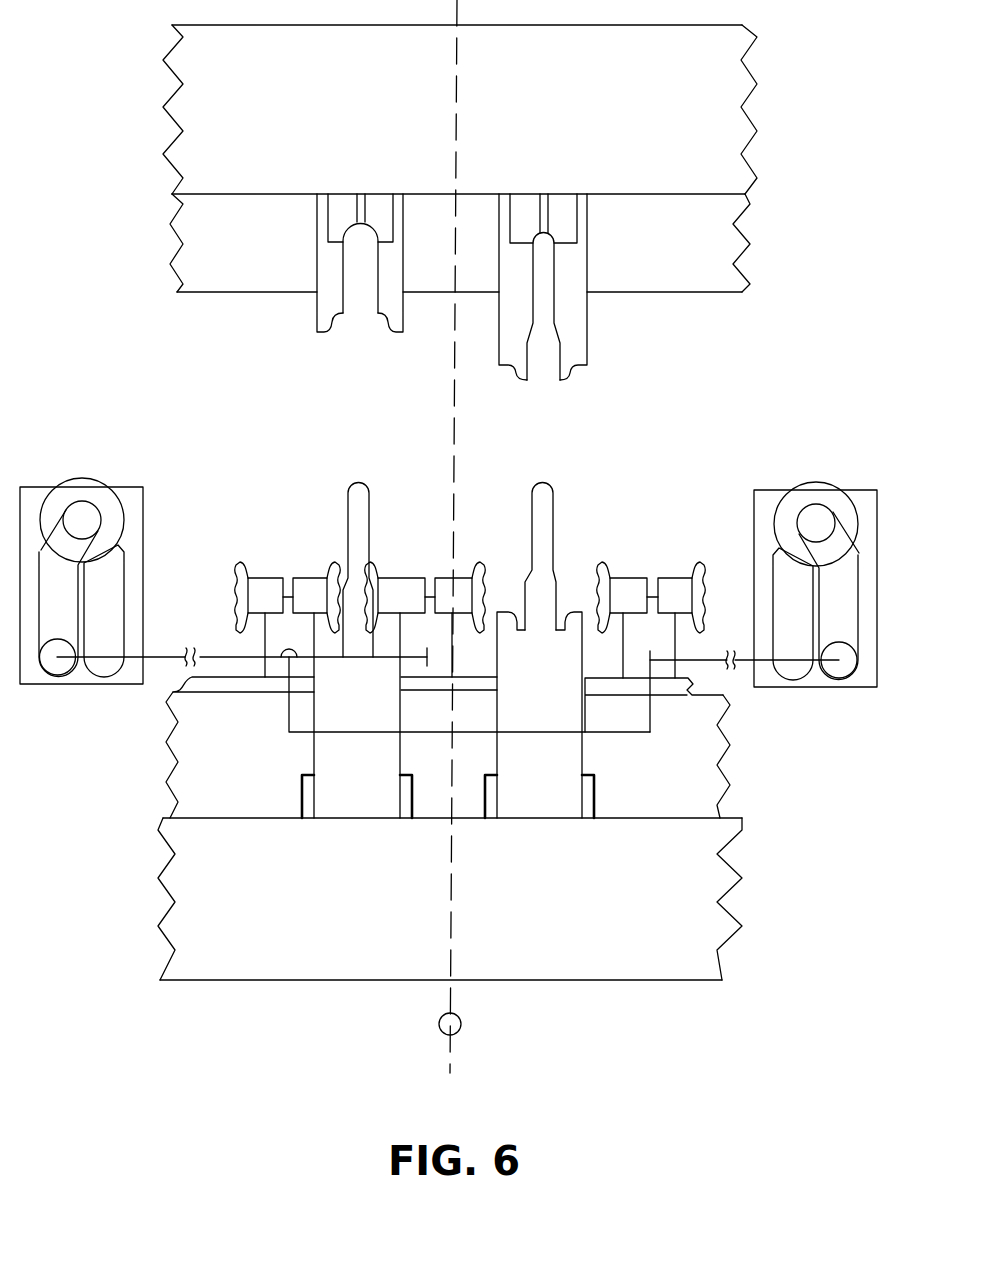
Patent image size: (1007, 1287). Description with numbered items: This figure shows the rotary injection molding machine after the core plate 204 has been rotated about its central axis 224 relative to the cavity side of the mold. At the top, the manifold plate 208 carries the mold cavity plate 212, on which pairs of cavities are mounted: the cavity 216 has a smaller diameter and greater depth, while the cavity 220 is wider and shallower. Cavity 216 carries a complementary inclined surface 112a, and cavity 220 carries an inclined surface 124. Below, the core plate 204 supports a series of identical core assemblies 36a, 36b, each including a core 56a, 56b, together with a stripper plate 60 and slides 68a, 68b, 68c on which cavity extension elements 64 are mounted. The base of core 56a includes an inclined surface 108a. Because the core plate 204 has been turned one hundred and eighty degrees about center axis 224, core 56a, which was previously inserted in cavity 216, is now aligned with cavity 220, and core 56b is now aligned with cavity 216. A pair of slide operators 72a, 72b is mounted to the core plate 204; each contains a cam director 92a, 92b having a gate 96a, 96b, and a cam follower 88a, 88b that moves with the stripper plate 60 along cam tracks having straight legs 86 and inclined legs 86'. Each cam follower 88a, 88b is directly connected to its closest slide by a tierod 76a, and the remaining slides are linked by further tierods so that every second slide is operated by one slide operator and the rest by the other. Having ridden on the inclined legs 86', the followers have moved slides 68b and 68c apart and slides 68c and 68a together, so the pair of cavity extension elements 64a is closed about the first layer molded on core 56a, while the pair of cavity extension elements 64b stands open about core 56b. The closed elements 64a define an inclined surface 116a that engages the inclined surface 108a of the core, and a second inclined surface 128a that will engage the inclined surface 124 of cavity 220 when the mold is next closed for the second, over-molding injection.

The manifold plate 208 is at (651, 72).
The mold cavity plate 212 is at (712, 227).
The cavity 220 is at (317, 325).
The inclined surface 124 is at (385, 318).
The cavity 216 is at (588, 323).
The inclined surface 112a is at (578, 367).
The slide operator 72a is at (42, 487).
The cam director 92a is at (86, 490).
The gate 96a is at (83, 519).
The leg 86 is at (448, 612).
The leg 86' is at (449, 595).
The tierod 76a is at (162, 656).
The cam follower 88a is at (57, 668).
The inclined surface 116a is at (331, 598).
The second inclined surface 128a is at (385, 563).
The cavity extension element 64 is at (277, 608).
The cavity extension elements 64a is at (327, 608).
The cavity extension elements 64b is at (471, 608).
The slide 68a is at (309, 644).
The slide 68c is at (444, 644).
The slide 68b is at (668, 644).
The core 56a is at (361, 603).
The inclined surface 108a is at (333, 628).
The core 56b is at (542, 622).
The core assembly 36a is at (376, 776).
The core assembly 36b is at (559, 778).
The stripper plate 60 is at (237, 768).
The core plate 204 is at (655, 925).
The central axis 224 is at (462, 1025).
The slide operator 72b is at (765, 490).
The cam director 92b is at (797, 492).
The gate 96b is at (826, 523).
The cam follower 88b is at (838, 670).